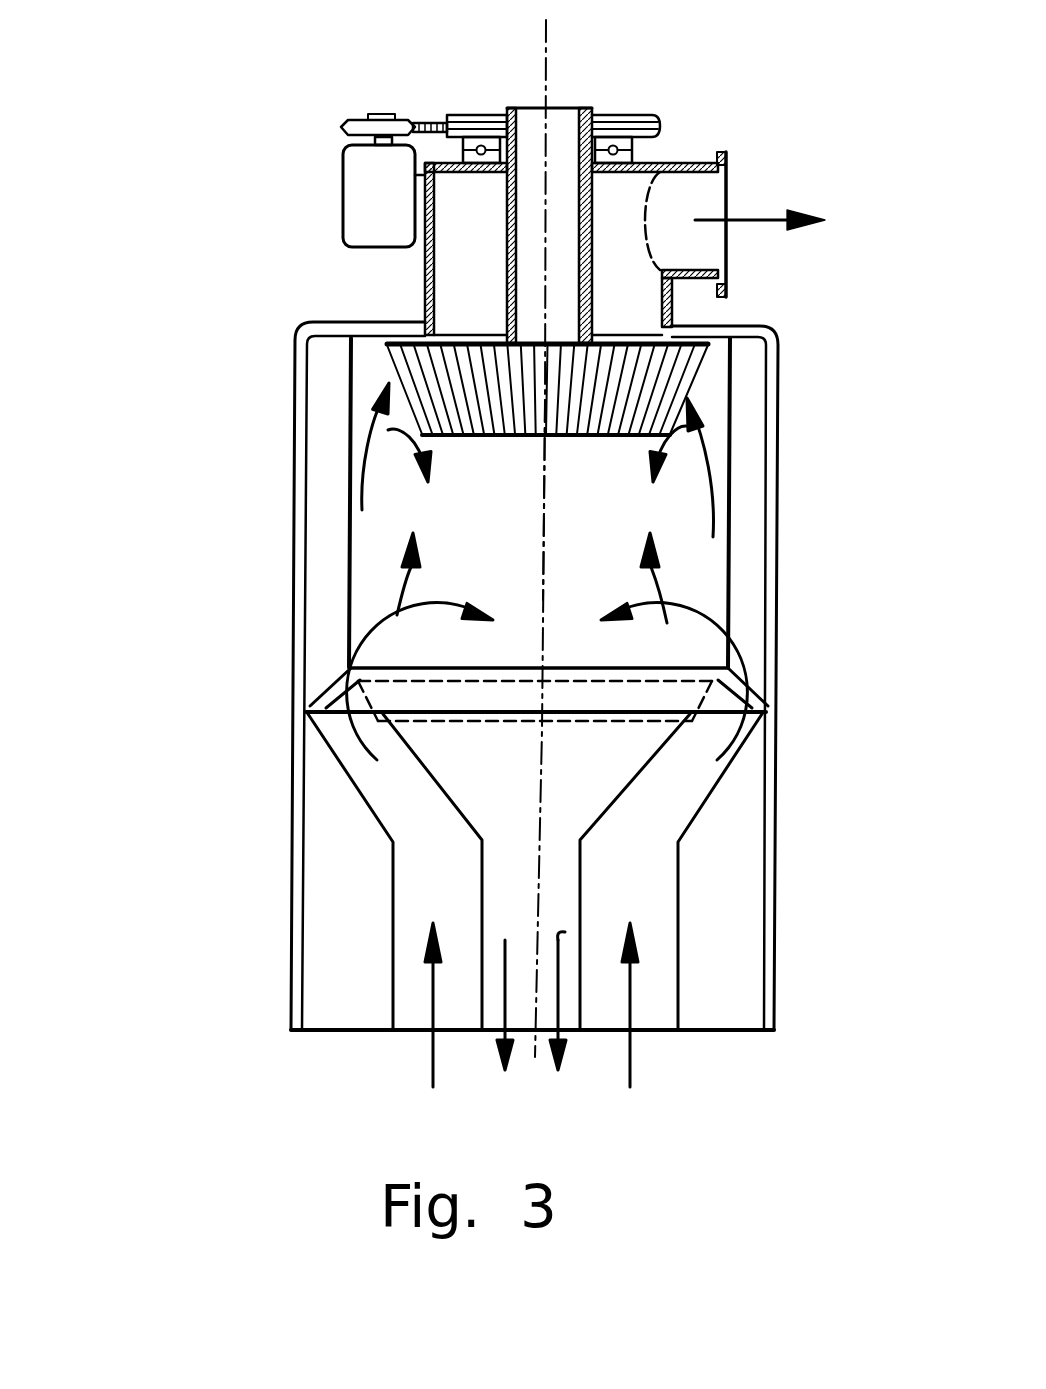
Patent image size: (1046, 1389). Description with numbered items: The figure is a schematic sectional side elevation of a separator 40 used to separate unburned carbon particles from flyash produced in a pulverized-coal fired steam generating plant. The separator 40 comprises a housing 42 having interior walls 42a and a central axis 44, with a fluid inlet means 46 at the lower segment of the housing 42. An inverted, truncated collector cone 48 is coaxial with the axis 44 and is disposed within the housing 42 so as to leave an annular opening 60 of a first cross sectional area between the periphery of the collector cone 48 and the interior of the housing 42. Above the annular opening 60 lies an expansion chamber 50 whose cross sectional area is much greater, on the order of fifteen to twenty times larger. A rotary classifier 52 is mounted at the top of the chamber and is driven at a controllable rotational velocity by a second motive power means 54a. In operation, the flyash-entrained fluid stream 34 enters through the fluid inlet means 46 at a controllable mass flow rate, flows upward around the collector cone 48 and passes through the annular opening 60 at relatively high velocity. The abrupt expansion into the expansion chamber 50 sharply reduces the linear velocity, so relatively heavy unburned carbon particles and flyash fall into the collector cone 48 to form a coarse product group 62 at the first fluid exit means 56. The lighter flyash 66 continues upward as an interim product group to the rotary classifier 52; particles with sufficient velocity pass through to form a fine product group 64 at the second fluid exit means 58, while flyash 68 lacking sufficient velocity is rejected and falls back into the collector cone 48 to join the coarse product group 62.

The flyash-entrained fluid stream 34 is at (404, 580).
The separator 40 is at (200, 660).
The housing 42 is at (786, 385).
The interior walls 42a is at (350, 566).
The axis 44 is at (546, 50).
The fluid inlet means 46 is at (413, 1032).
The collector cone 48 is at (637, 778).
The expansion chamber 50 is at (568, 548).
The rotary classifier 52 is at (511, 437).
The second motive power means 54a is at (343, 157).
The first fluid exit means 56 is at (540, 1060).
The second fluid exit means 58 is at (725, 187).
The annular opening 60 is at (312, 700).
The coarse product group 62 is at (387, 635).
The fine product group 64 is at (743, 218).
The interim product group flyash 66 is at (361, 498).
The rejected flyash 68 is at (383, 427).